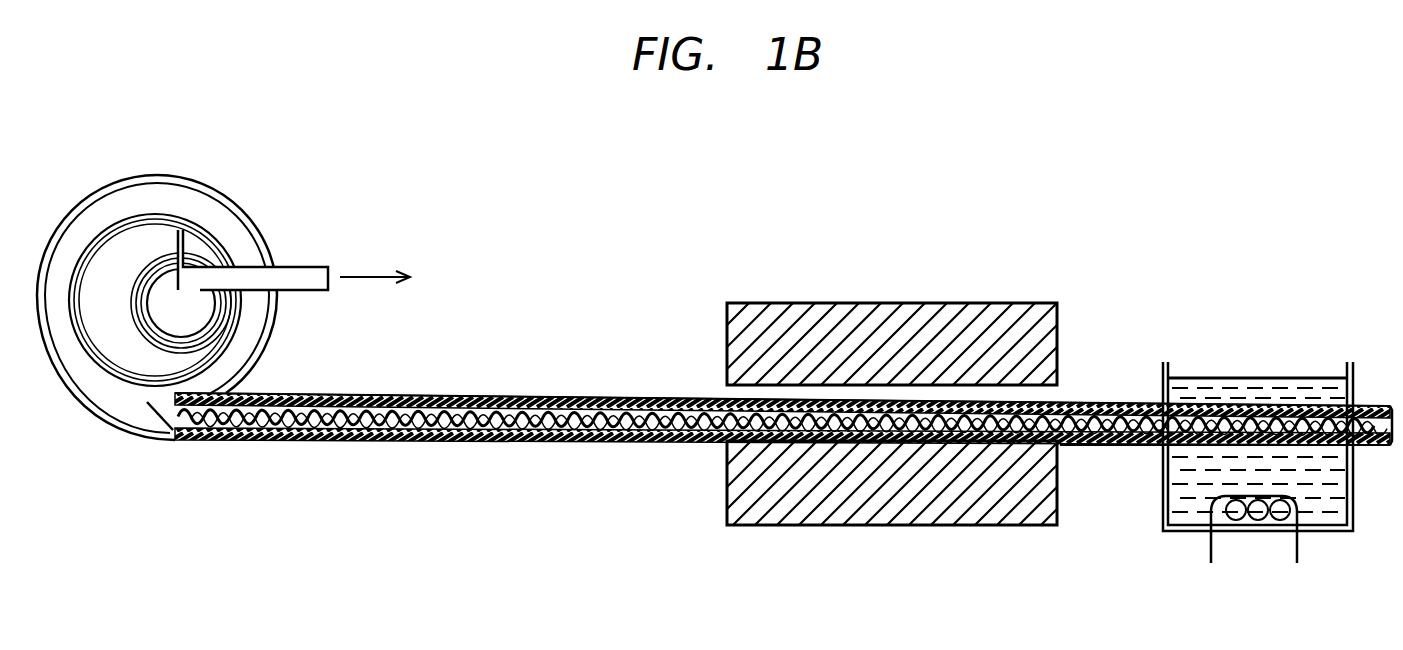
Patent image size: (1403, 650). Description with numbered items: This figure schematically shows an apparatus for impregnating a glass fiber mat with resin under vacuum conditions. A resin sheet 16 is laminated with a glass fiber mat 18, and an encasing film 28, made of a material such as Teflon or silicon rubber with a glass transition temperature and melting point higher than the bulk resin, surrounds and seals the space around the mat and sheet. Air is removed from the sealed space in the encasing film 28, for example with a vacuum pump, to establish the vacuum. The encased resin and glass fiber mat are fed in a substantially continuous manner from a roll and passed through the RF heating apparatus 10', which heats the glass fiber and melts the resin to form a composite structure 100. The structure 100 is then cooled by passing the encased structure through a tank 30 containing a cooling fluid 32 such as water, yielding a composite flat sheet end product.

The encasing film 28 is at (253, 227).
The resin sheet 16 is at (503, 396).
The glass fiber mat 18 is at (537, 443).
The composite structure 100 is at (1108, 448).
The RF heating apparatus 10' is at (888, 379).
The tank 30 is at (1160, 512).
The cooling fluid 32 is at (1220, 377).